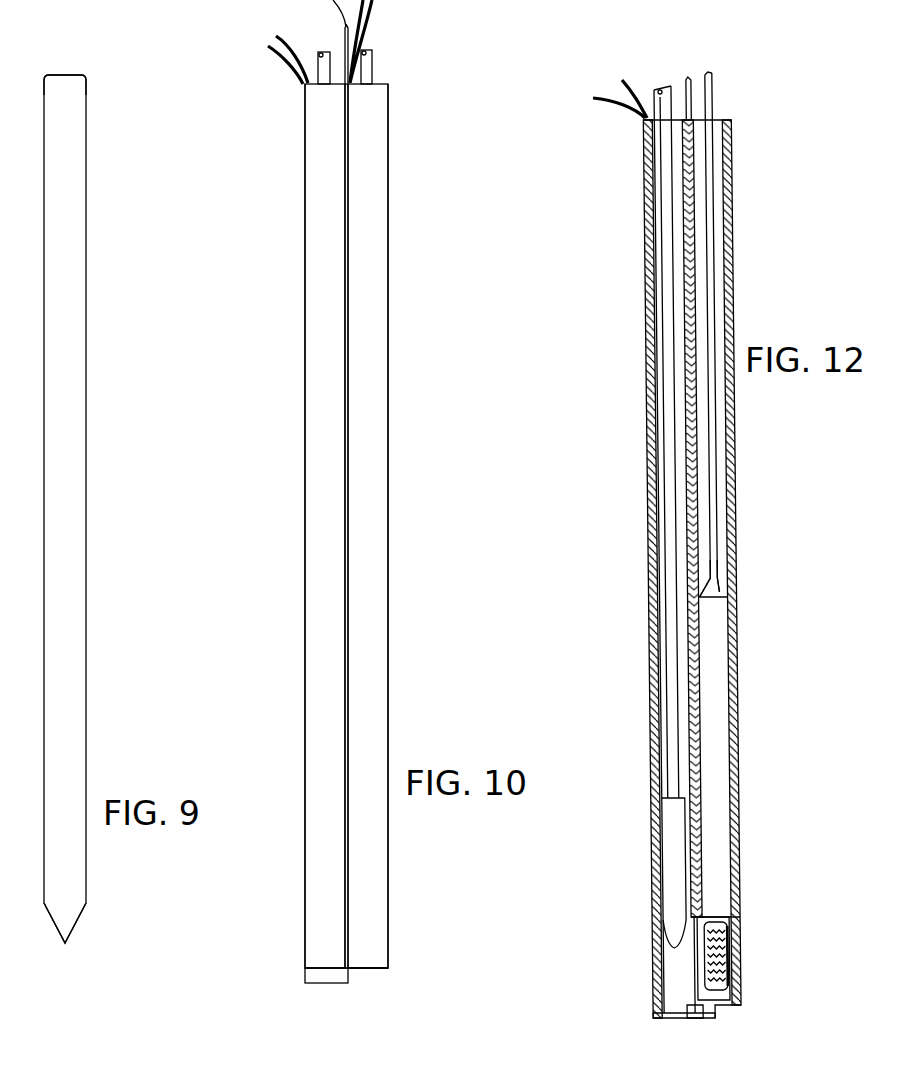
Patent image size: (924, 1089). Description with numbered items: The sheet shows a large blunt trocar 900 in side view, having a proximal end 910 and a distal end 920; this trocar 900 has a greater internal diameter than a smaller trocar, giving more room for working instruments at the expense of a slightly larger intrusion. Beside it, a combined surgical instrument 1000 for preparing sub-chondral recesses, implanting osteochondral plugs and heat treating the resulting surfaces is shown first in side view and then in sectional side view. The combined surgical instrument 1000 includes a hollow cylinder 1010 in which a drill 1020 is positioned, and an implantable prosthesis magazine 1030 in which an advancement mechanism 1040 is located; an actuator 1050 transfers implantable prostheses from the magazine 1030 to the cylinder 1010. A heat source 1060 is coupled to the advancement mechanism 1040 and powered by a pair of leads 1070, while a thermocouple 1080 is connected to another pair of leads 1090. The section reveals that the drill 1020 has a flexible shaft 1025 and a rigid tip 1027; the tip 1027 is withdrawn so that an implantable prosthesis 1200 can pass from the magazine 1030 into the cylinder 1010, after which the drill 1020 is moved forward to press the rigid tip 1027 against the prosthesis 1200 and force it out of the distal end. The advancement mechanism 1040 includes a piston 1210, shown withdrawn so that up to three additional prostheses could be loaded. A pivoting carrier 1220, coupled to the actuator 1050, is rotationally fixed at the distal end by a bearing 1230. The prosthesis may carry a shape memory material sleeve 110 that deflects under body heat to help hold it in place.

In FIG. 9, the large trocar 900 is at (65, 480).
In FIG. 9, the proximal end 910 is at (70, 74).
In FIG. 9, the distal end 920 is at (72, 903).
In FIG. 10, the combined surgical instrument 1000 is at (305, 602).
In FIG. 10, the hollow cylinder 1010 is at (305, 302).
In FIG. 12, the hollow cylinder 1010 is at (660, 975).
In FIG. 10, the drill 1020 is at (324, 52).
In FIG. 12, the drill 1020 is at (660, 90).
In FIG. 12, the flexible shaft 1025 is at (667, 357).
In FIG. 12, the rigid tip 1027 is at (665, 852).
In FIG. 10, the implantable prosthesis magazine 1030 is at (367, 428).
In FIG. 12, the implantable prosthesis magazine 1030 is at (740, 750).
In FIG. 10, the advancement mechanism 1040 is at (372, 50).
In FIG. 12, the advancement mechanism 1040 is at (713, 97).
In FIG. 10, the actuator 1050 is at (340, 484).
In FIG. 12, the actuator 1050 is at (692, 85).
In FIG. 12, the heat source 1060 is at (715, 552).
In FIG. 10, the pair of leads 1070 is at (280, 58).
In FIG. 12, the pair of leads 1070 is at (627, 113).
In FIG. 10, the thermocouple 1080 is at (348, 983).
In FIG. 10, the pair of leads 1090 is at (372, 18).
In FIG. 10, the shape memory material sleeve 110 is at (317, 975).
In FIG. 12, the implantable prosthesis 1200 is at (713, 963).
In FIG. 12, the piston 1210 is at (715, 588).
In FIG. 12, the pivoting carrier 1220 is at (713, 917).
In FIG. 12, the bearing 1230 is at (692, 1020).